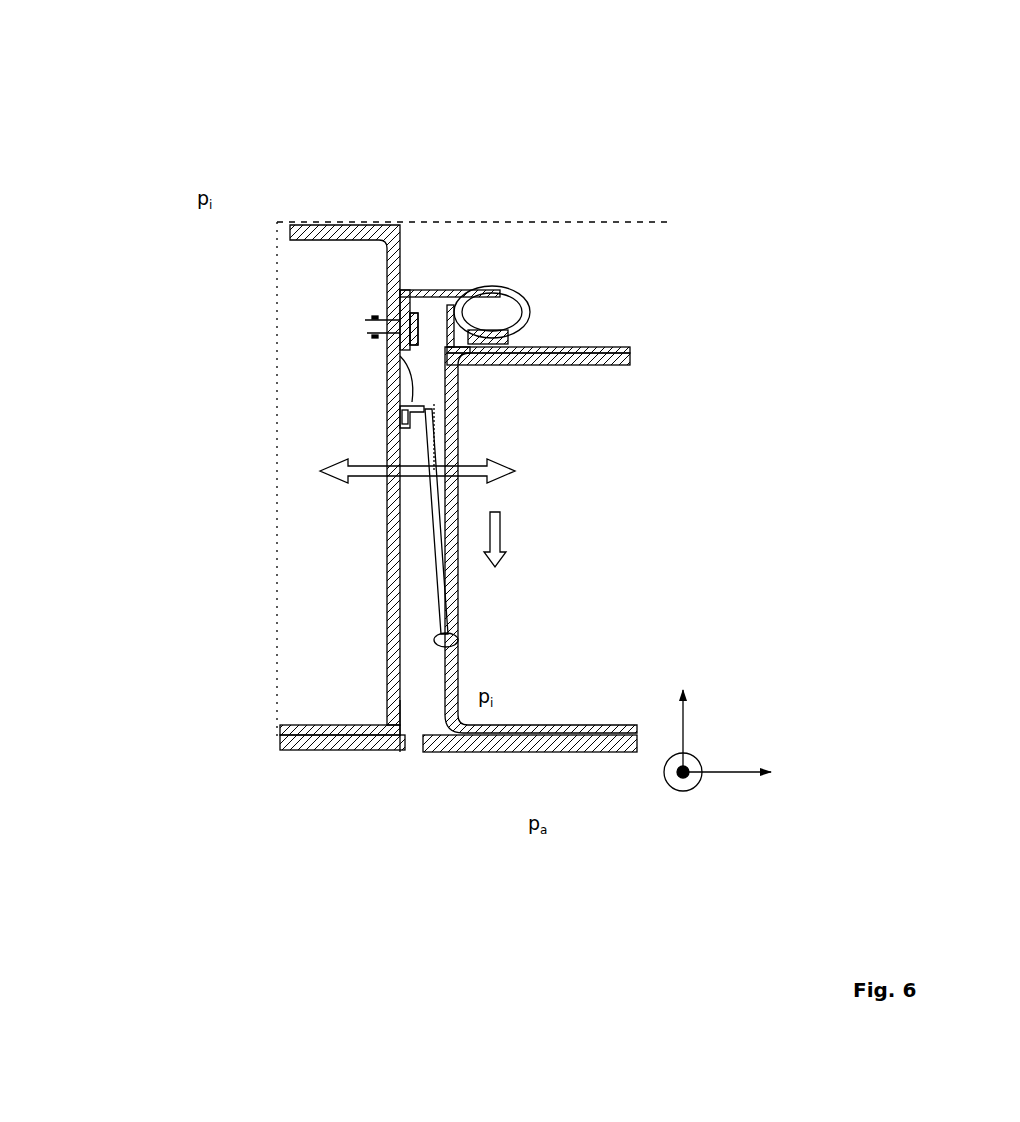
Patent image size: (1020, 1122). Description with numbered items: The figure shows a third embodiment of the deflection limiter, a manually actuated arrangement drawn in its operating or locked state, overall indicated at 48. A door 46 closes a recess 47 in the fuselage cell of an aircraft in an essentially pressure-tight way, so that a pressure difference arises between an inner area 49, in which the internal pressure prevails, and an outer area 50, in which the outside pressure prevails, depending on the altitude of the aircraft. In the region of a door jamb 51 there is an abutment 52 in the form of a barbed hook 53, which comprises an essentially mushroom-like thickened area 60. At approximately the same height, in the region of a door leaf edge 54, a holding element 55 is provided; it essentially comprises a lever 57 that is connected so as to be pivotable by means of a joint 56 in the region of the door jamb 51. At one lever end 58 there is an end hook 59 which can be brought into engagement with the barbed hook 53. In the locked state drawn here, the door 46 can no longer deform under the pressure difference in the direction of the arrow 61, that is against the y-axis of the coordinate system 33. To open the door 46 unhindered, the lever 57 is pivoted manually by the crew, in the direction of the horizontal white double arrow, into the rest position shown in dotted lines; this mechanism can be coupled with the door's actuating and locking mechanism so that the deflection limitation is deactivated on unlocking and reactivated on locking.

The coordinate system 33 is at (688, 760).
The door 46 is at (600, 346).
The recess 47 is at (536, 236).
The housing assembly 48 is at (538, 124).
The inner area 49 is at (309, 286).
The outer area 50 is at (529, 784).
The door jamb 51 is at (390, 636).
The abutment 52 is at (395, 388).
The barbed hook 53 is at (222, 334).
The door leaf edge 54 is at (458, 690).
The holding element 55 is at (426, 541).
The joint 56 is at (458, 638).
The lever 57 is at (452, 580).
The lever end 58 is at (434, 416).
The end hook 59 is at (396, 362).
The mushroom-like thickened area 60 is at (398, 432).
The arrow 61 is at (492, 532).